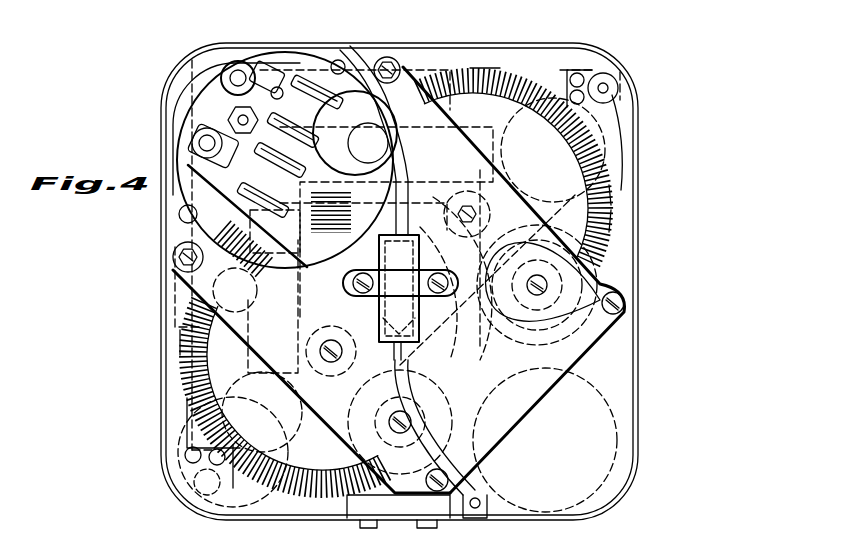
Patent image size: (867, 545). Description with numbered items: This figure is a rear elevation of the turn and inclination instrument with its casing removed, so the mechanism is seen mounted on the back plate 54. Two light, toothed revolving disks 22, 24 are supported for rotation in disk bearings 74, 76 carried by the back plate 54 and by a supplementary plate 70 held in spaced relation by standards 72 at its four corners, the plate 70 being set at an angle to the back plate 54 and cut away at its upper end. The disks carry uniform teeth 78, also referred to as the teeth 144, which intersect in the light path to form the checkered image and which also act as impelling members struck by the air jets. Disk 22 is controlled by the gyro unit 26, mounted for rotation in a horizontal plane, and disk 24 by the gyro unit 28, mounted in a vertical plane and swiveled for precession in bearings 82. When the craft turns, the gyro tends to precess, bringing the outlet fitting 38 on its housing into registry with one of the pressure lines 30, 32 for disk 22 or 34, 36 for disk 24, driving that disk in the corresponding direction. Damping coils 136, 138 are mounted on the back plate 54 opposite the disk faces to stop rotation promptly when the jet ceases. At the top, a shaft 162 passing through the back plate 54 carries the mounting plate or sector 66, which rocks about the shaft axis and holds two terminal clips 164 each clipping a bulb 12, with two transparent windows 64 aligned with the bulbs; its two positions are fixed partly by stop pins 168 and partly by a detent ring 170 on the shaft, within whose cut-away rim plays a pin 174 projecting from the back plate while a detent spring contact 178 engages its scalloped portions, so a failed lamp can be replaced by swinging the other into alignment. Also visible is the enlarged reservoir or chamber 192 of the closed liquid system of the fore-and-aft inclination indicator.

The bulb 12 is at (403, 67).
The revolving disk 22 is at (570, 173).
The revolving disk 24 is at (220, 355).
The gyro unit 26 is at (503, 133).
The gyro unit 28 is at (255, 422).
The pressure line 30 is at (587, 73).
The pressure line 32 is at (610, 110).
The pressure line 34 is at (190, 470).
The pressure line 36 is at (238, 498).
The outlet fitting 38 is at (595, 538).
The back plate 54 is at (637, 340).
The transparent window 64 is at (390, 153).
The mounting plate or sector 66 is at (293, 63).
The supplementary plate 70 is at (610, 195).
The standards 72 is at (623, 298).
The disk bearing 74 is at (330, 365).
The disk bearing 76 is at (480, 213).
The teeth 78 is at (493, 70).
The bearings 82 is at (640, 540).
The coil 136 is at (462, 425).
The coil 138 is at (603, 280).
The teeth 144 is at (617, 220).
The shaft 162 is at (243, 118).
The terminal clip 164 is at (314, 78).
The stop pin 168 is at (360, 110).
The detent ring 170 is at (190, 110).
The pin 174 is at (283, 68).
The detent spring contact 178 is at (233, 230).
The reservoir or chamber 192 is at (408, 260).